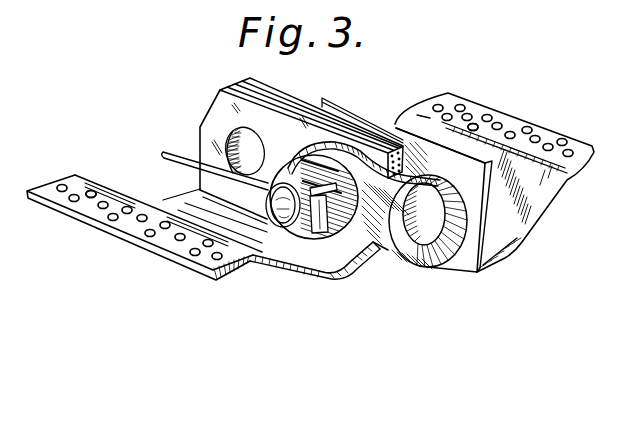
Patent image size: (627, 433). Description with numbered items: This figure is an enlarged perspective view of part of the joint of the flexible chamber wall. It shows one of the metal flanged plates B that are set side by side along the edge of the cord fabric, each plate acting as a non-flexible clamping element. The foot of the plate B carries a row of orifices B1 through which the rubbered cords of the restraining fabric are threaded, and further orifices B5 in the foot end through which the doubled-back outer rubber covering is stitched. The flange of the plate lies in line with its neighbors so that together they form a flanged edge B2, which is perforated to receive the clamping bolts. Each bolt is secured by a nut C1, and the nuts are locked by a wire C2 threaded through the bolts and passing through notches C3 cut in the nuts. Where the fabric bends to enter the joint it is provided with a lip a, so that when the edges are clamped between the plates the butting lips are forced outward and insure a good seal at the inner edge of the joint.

The flanged plate B is at (520, 187).
The orifices B1 is at (148, 235).
The flanged edge B2 is at (346, 196).
The orifices B5 is at (480, 97).
The nut C1 is at (294, 238).
The wire C2 is at (168, 149).
The notches C3 is at (318, 233).
The lip a is at (378, 264).